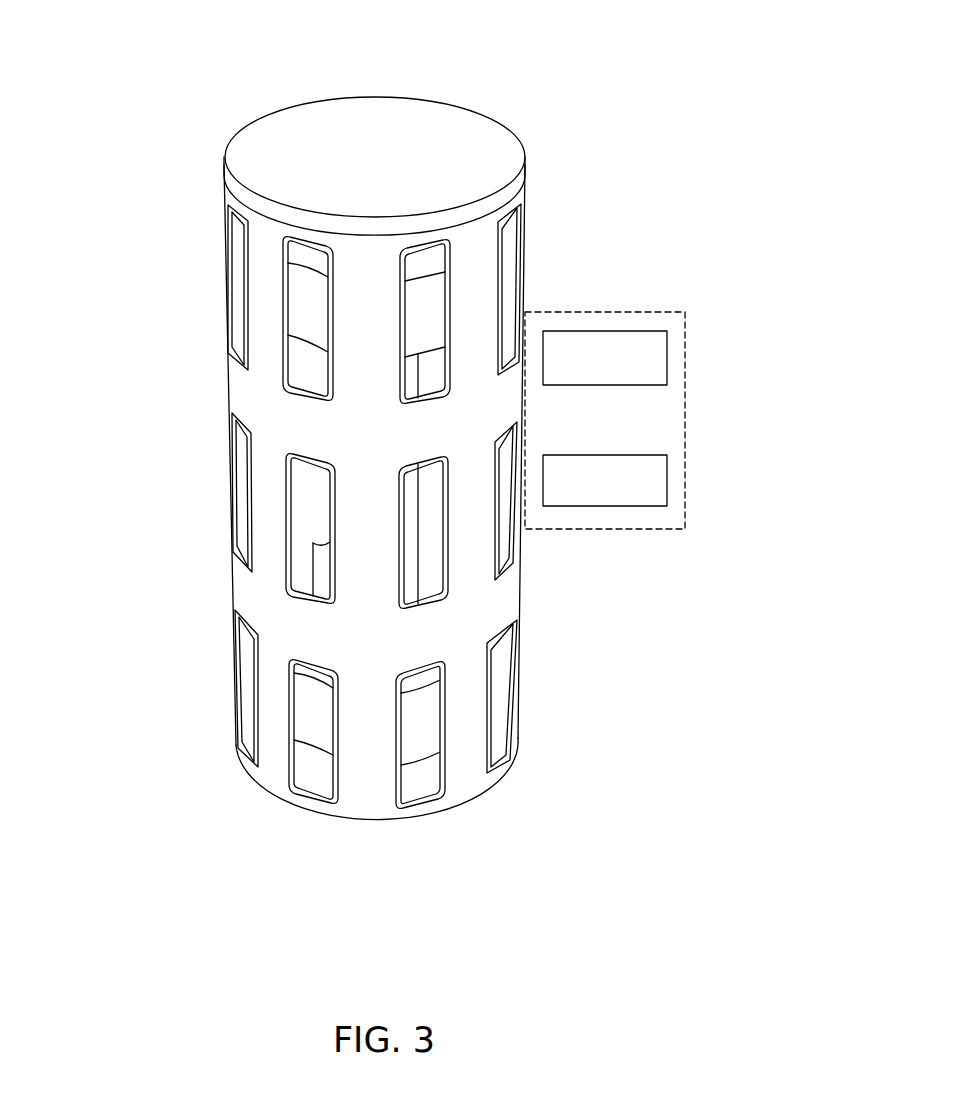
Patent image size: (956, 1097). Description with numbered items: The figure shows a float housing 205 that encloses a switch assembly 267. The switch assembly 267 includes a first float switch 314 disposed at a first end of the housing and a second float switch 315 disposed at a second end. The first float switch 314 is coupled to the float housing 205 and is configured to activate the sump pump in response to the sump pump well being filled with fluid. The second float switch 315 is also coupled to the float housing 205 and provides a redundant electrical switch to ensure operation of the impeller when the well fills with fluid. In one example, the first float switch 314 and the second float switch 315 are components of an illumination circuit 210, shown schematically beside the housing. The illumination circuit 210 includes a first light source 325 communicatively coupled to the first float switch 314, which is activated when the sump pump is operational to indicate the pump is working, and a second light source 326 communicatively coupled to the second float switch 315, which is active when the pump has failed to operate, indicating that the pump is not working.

The float housing 205 is at (509, 123).
The switch assembly 267 is at (200, 303).
The second float switch 315 is at (425, 315).
The first float switch 314 is at (417, 733).
The illumination circuit 210 is at (622, 432).
The second light source 326 is at (605, 358).
The first light source 325 is at (605, 480).